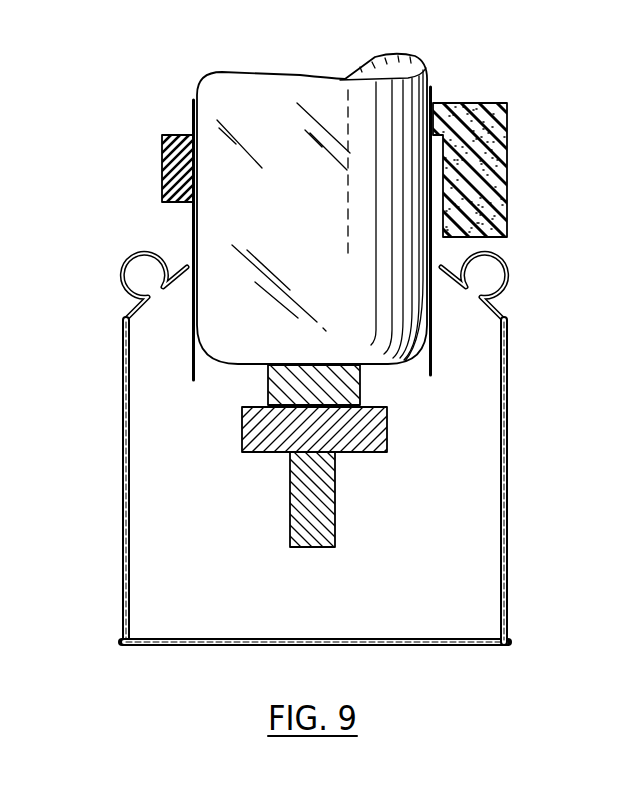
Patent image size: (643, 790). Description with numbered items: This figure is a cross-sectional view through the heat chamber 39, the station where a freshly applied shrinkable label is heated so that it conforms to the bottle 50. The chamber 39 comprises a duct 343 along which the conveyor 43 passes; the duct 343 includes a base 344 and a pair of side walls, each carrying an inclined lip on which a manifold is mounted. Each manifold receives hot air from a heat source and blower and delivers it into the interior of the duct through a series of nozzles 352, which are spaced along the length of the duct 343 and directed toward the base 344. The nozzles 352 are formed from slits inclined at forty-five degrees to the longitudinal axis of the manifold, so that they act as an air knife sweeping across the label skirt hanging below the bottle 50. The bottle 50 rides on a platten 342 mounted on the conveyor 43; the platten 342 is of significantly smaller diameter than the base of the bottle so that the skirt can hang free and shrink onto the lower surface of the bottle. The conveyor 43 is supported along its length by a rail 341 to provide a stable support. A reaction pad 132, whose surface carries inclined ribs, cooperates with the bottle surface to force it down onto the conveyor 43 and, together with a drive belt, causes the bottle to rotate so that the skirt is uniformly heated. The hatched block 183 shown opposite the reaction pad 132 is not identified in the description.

The bottle 50 is at (348, 252).
The heater block 183 is at (162, 160).
The reaction pad 132 is at (507, 165).
The platten 342 is at (270, 402).
The rail 341 is at (300, 478).
The nozzles 352 is at (155, 295).
The conveyor 43 is at (426, 476).
The heat chamber 39 is at (497, 599).
The duct 343 is at (123, 562).
The base 344 is at (263, 648).